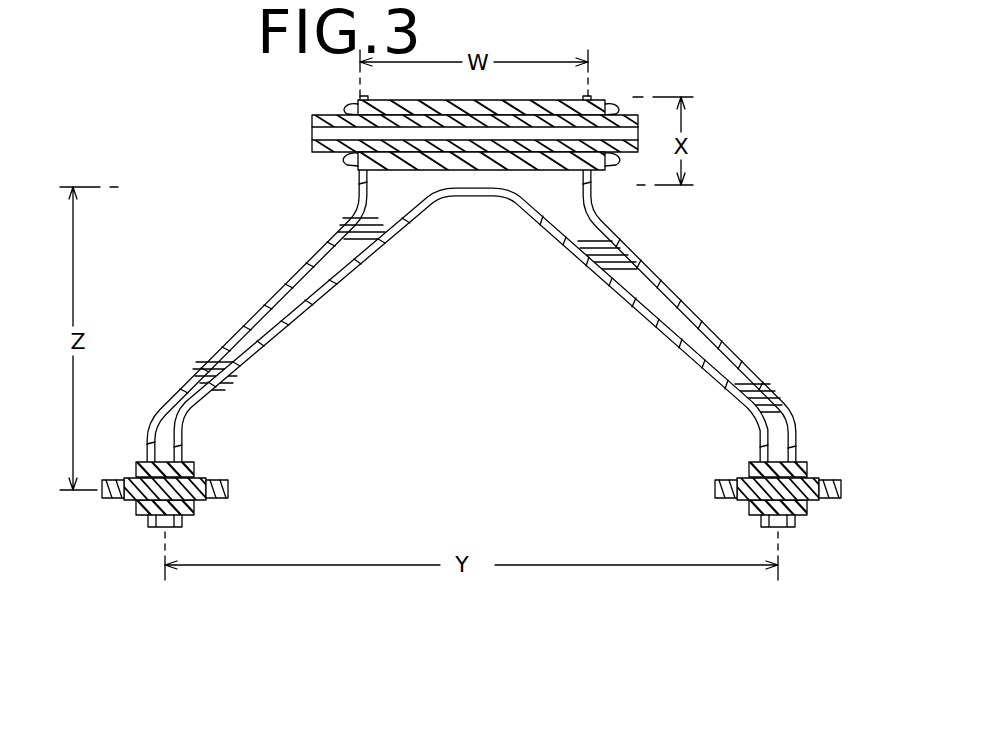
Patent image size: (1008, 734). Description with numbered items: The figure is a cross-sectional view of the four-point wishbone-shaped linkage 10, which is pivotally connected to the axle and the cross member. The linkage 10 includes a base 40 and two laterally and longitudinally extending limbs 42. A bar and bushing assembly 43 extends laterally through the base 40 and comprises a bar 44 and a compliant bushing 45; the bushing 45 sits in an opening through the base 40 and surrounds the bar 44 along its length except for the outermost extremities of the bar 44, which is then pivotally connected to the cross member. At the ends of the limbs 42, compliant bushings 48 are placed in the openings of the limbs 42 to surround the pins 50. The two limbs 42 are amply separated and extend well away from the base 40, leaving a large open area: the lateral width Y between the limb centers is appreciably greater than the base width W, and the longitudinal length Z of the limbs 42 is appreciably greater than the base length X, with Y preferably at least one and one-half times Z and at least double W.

The wishbone-shaped linkage 10 is at (474, 445).
The base 40 is at (480, 194).
The limbs 42 is at (262, 314).
The bar and bushing assembly 43 is at (291, 114).
The bar 44 is at (314, 152).
The bushing 45 is at (352, 103).
The compliant bushing 48 is at (187, 470).
The pins 50 is at (226, 486).